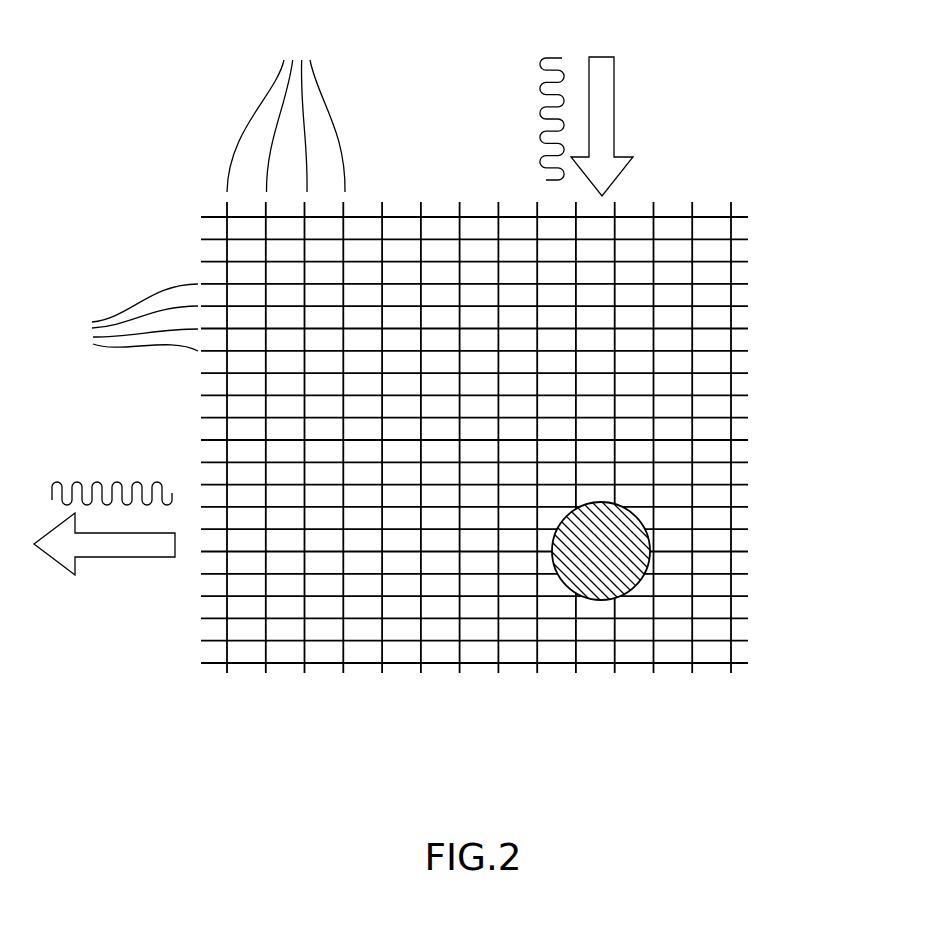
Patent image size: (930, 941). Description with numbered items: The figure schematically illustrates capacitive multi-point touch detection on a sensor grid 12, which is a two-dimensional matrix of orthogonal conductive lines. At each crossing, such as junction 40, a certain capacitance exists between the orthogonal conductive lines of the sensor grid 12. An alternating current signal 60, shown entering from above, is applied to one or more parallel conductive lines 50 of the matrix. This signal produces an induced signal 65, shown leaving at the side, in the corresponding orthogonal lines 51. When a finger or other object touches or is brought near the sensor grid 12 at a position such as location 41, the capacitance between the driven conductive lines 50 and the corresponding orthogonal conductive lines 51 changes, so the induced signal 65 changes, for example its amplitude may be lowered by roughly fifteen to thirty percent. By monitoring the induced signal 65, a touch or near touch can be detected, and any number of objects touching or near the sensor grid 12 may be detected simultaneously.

The sensor grid 12 is at (474, 485).
The junction 40 is at (654, 643).
The location 41 is at (638, 513).
The parallel conductive lines 50 is at (286, 110).
The orthogonal lines 51 is at (125, 317).
The alternating current signal 60 is at (603, 112).
The induced signal 65 is at (130, 557).